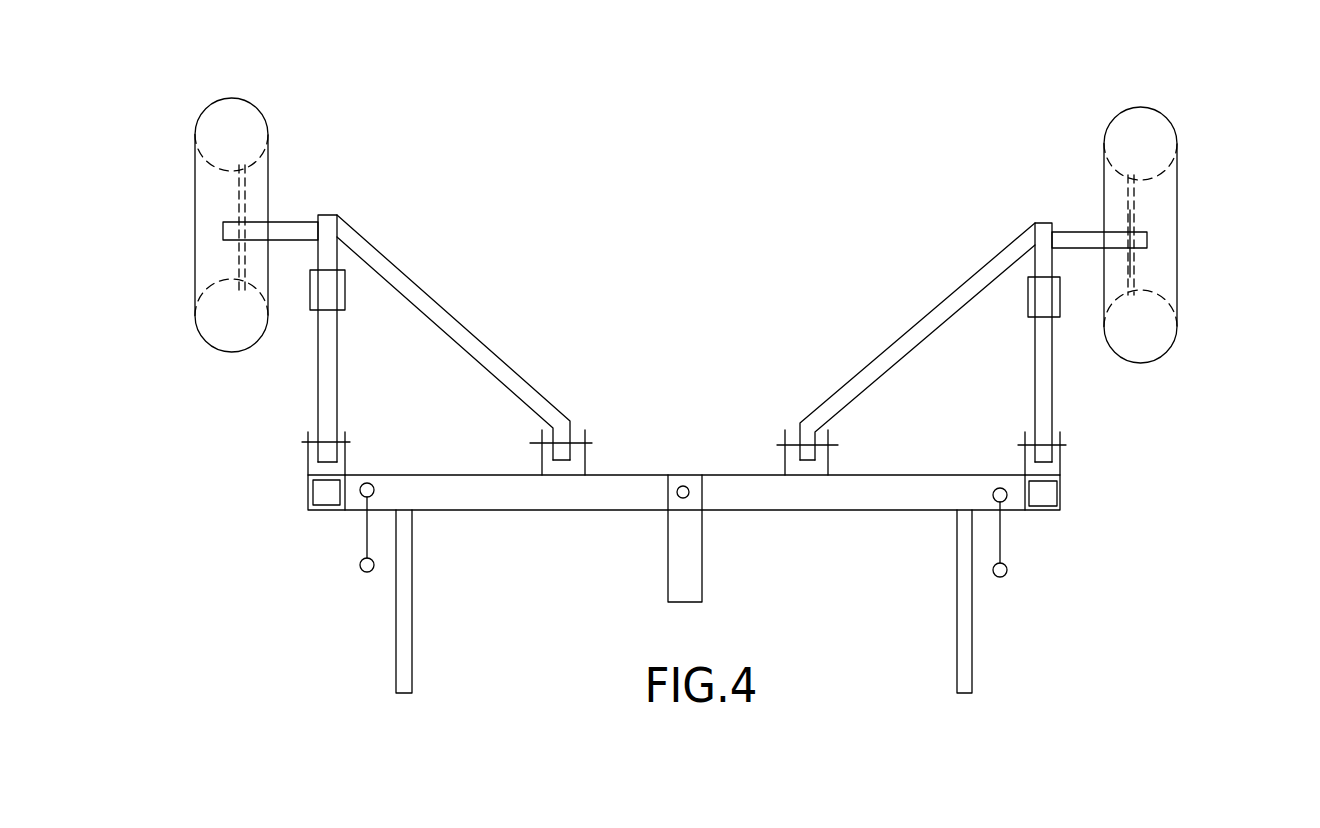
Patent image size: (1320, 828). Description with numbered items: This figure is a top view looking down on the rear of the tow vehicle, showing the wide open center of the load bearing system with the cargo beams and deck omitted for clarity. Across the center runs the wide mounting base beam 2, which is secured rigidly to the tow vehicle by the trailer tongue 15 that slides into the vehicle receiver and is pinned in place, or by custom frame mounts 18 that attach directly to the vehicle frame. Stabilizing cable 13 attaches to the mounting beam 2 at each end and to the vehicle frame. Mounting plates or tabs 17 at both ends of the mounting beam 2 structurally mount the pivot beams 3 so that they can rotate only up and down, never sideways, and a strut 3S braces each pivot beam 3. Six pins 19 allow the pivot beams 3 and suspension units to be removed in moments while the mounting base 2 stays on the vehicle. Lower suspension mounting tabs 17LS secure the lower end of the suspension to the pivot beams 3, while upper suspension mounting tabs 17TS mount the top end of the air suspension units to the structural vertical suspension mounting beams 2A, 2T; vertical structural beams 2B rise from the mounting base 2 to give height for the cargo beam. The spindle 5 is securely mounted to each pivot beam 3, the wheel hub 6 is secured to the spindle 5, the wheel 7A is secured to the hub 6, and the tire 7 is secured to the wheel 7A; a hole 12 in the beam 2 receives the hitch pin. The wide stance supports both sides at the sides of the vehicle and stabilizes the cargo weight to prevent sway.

The mounting base beam 2 is at (676, 540).
The structural vertical suspension mounting beam 2A is at (676, 542).
The vertical structural beam 2B is at (312, 486).
The structural vertical suspension mounting beam 2T is at (609, 490).
The pivot beam 3 is at (338, 355).
The diagonal strut 3S is at (400, 271).
The axle or spindle 5 is at (298, 222).
The wheel hub 6 is at (230, 292).
The tire 7 is at (220, 103).
The wheel 7A is at (243, 197).
The hitch hole 12 is at (683, 486).
The stabilizing cable 13 is at (365, 535).
The tongue 15 is at (677, 578).
The mounting plate or tab 17 is at (308, 457).
The lower suspension mounting tab 17LS is at (1028, 298).
The upper suspension mounting tab 17TS is at (310, 440).
The custom frame mount 18 is at (406, 555).
The pin 19 is at (782, 446).